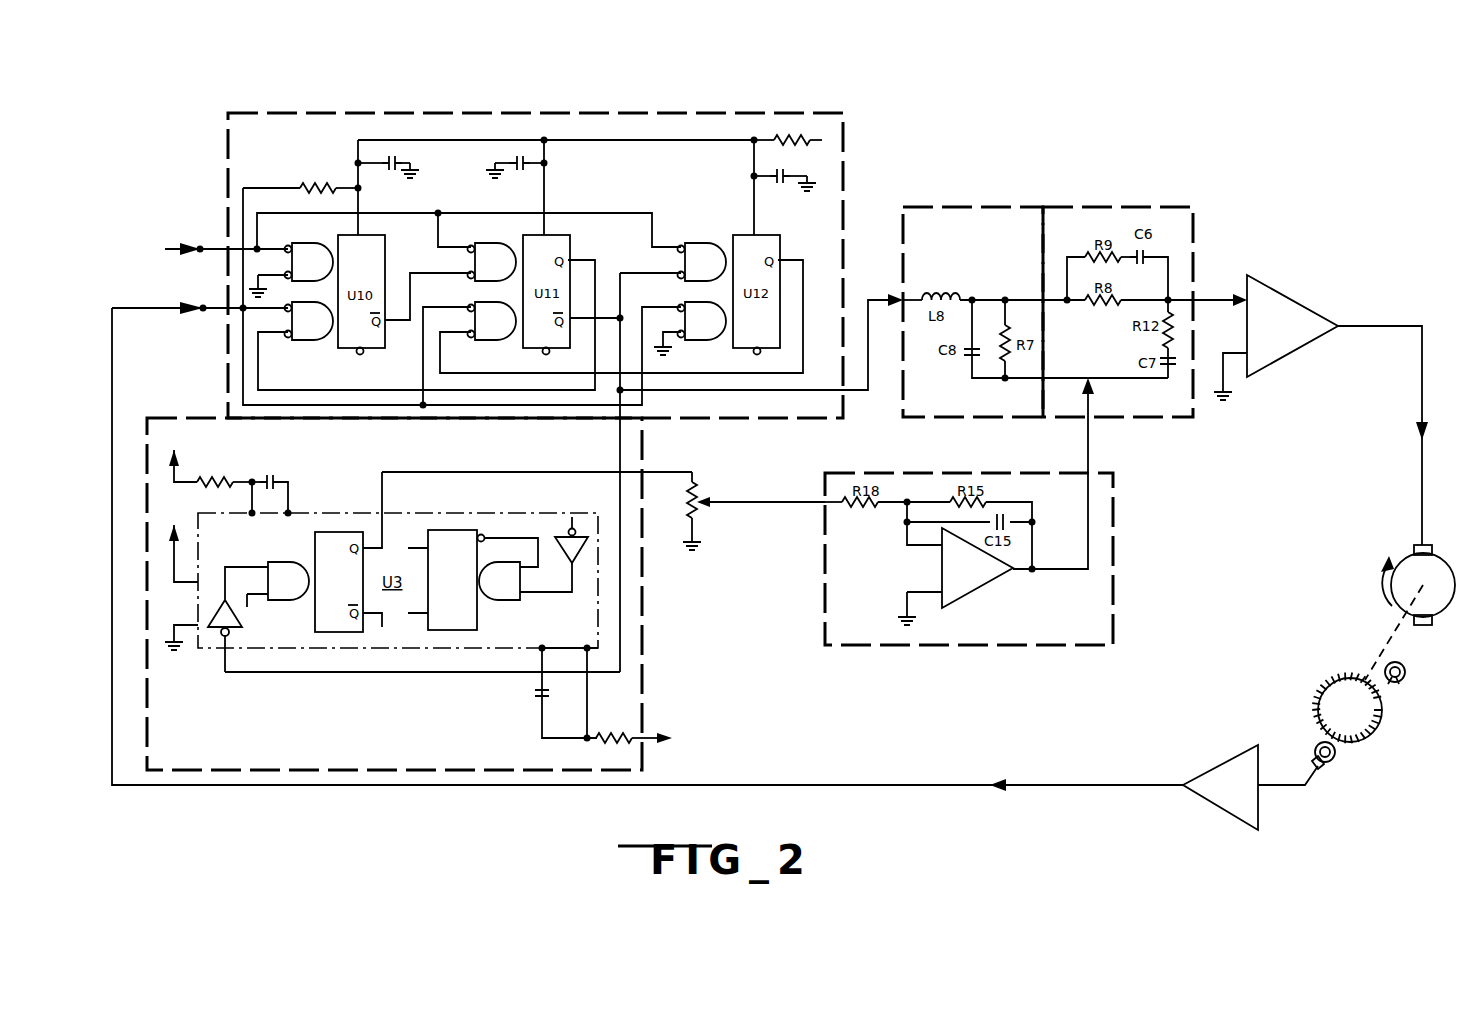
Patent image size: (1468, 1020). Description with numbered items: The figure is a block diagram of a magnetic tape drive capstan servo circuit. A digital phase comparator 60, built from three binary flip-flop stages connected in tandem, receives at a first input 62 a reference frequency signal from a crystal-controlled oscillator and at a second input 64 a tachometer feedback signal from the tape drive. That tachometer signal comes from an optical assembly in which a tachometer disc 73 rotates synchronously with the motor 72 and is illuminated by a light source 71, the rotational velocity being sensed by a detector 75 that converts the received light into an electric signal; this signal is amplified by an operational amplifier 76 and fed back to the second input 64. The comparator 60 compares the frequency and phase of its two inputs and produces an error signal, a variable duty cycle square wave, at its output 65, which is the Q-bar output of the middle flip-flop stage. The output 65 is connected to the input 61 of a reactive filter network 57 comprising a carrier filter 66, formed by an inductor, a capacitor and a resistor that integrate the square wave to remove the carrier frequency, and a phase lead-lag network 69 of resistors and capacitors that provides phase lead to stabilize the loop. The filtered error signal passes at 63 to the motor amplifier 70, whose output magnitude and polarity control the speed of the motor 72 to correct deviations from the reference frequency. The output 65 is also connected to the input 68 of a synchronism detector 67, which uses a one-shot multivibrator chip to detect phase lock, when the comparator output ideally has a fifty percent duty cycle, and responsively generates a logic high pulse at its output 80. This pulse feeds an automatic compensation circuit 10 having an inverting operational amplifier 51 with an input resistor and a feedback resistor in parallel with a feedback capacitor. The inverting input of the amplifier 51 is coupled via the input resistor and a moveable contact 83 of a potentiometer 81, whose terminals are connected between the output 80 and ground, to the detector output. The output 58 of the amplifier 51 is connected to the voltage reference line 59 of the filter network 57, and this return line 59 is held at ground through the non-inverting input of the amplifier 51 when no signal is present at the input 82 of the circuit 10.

The automatic compensation circuit 10 is at (1105, 593).
The inverting operational amplifier 51 is at (992, 578).
The reactive filter network 57 is at (1083, 322).
The output of inverting amplifier 58 is at (1090, 432).
The voltage reference line 59 is at (1138, 380).
The phase comparator 60 is at (228, 150).
The input of filter network 61 is at (893, 294).
The first input 62 is at (200, 247).
The filter output line 63 is at (1215, 297).
The second input 64 is at (203, 306).
The output of phase comparator 65 is at (857, 388).
The carrier filter 66 is at (973, 312).
The synchronism detector 67 is at (394, 594).
The input of synchronism detector 68 is at (620, 412).
The phase lead-lag network 69 is at (1202, 409).
The motor amplifier 70 is at (1284, 305).
The light source 71 is at (1399, 664).
The motor 72 is at (1409, 562).
The tachometer disc 73 is at (1383, 715).
The detector 75 is at (1337, 758).
The operational amplifier 76 is at (1219, 778).
The output of synchronism detector 80 is at (645, 470).
The potentiometer 81 is at (703, 493).
The input of compensation circuit 82 is at (822, 500).
The moveable contact 83 is at (740, 506).